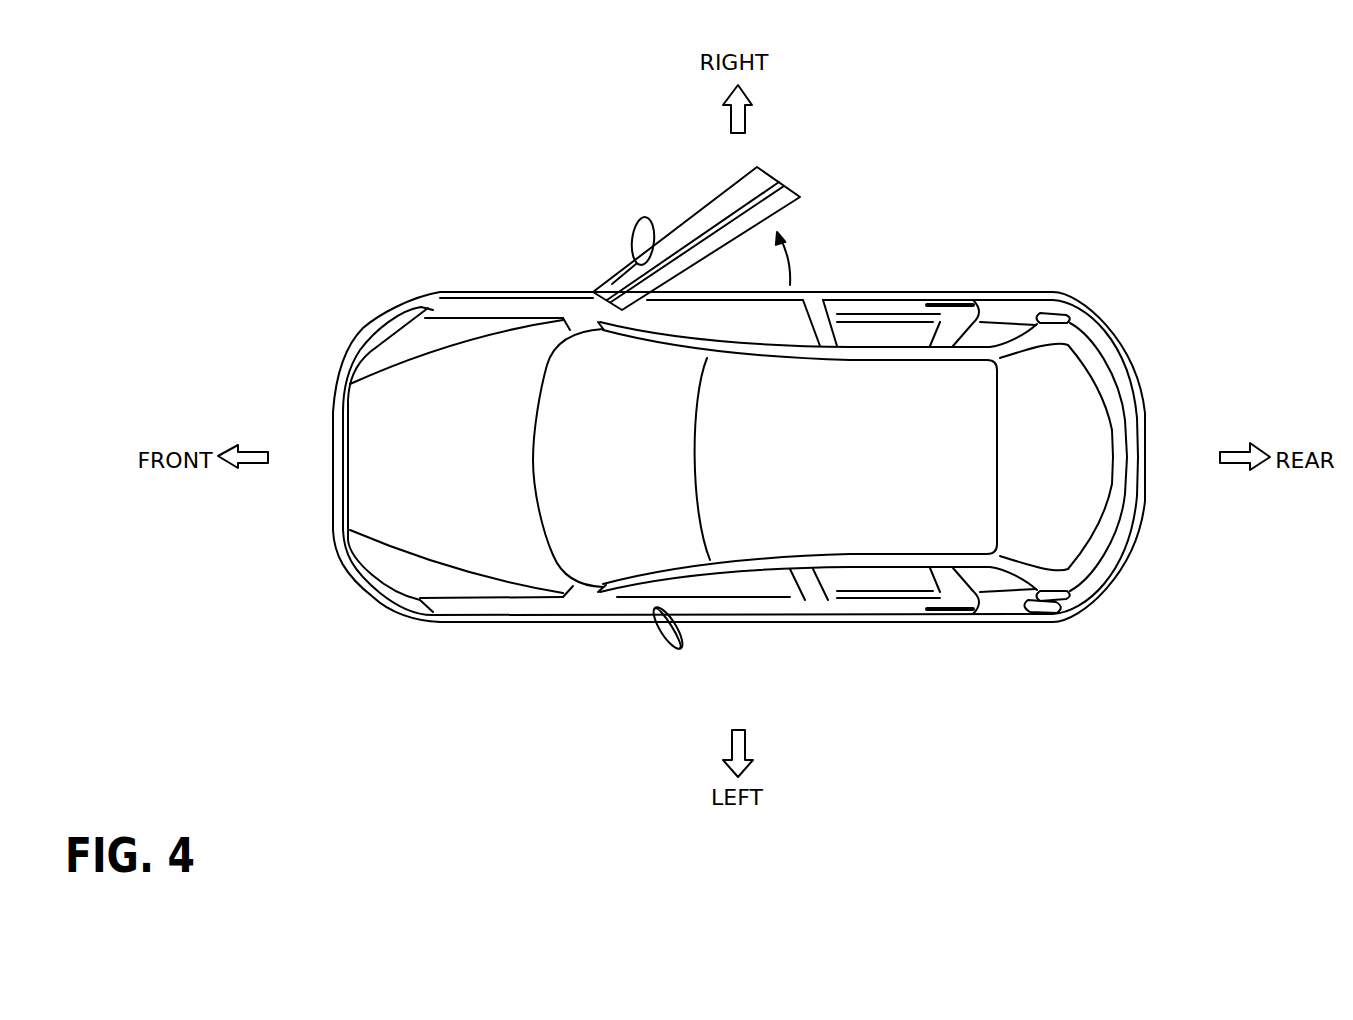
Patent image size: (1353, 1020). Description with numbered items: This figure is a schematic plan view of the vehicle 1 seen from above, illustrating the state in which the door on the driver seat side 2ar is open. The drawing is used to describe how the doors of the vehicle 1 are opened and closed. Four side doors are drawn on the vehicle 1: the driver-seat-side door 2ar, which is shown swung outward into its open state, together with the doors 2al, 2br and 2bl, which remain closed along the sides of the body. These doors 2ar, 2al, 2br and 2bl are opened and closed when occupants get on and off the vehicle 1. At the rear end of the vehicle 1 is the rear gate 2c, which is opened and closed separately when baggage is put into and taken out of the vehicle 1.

The vehicle 1 is at (1086, 293).
The door on a driver seat side 2ar is at (730, 188).
The door 2br is at (890, 302).
The door 2al is at (747, 613).
The door 2bl is at (887, 610).
The rear gate 2c is at (1123, 398).